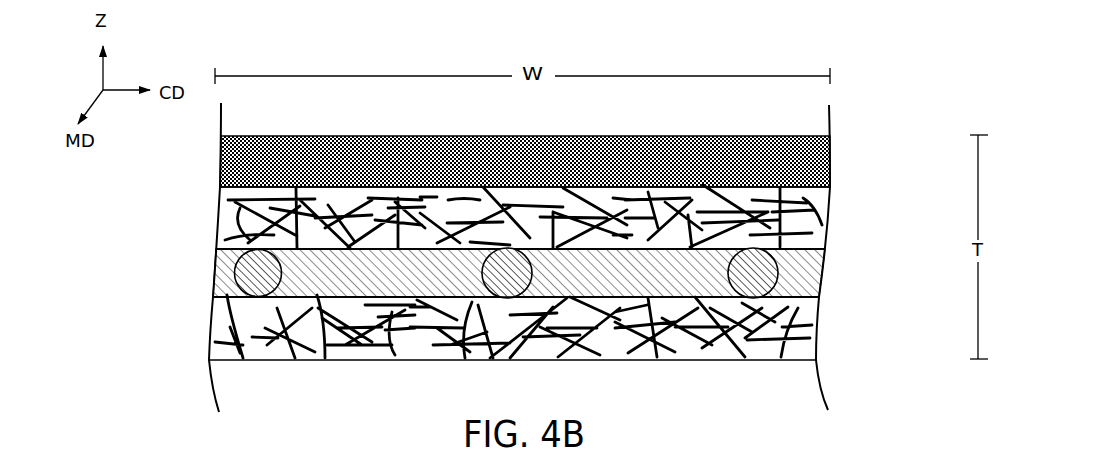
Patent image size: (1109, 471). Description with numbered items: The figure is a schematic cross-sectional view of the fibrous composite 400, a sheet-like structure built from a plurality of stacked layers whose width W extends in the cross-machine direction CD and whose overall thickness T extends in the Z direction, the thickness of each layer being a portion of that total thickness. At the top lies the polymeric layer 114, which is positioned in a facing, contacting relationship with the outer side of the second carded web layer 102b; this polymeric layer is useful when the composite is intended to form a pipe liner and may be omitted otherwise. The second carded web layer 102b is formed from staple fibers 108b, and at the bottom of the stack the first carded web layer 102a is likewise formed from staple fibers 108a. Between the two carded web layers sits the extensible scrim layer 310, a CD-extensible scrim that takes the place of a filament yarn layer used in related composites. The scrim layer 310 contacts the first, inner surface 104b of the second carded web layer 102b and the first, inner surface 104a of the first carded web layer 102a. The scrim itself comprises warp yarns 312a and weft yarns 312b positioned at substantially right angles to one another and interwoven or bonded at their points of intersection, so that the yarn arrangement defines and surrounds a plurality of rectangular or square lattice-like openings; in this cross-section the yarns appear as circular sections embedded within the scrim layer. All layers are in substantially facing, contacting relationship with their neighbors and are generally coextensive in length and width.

The composite 400 is at (884, 107).
The polymeric layer 114 is at (214, 160).
The second carded web layer 102b is at (213, 216).
The first carded web layer 102a is at (206, 336).
The staple fibers 108b is at (812, 212).
The staple fibers 108a is at (812, 325).
The extensible scrim layer 310 is at (877, 279).
The first, inner side or surface 104b is at (820, 251).
The first, inner side or surface 104a is at (816, 293).
The weft yarns 312b is at (235, 259).
The warp yarns 312a is at (250, 283).